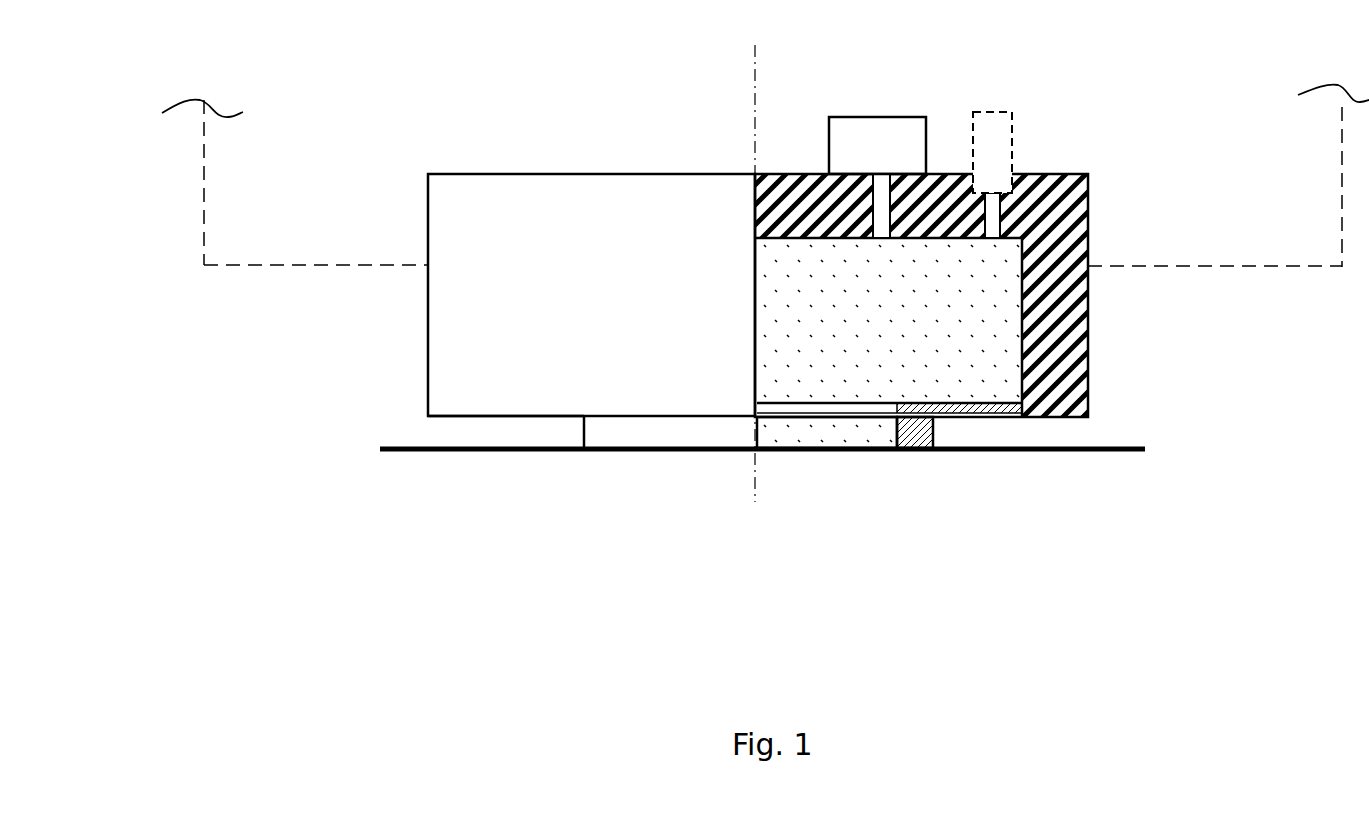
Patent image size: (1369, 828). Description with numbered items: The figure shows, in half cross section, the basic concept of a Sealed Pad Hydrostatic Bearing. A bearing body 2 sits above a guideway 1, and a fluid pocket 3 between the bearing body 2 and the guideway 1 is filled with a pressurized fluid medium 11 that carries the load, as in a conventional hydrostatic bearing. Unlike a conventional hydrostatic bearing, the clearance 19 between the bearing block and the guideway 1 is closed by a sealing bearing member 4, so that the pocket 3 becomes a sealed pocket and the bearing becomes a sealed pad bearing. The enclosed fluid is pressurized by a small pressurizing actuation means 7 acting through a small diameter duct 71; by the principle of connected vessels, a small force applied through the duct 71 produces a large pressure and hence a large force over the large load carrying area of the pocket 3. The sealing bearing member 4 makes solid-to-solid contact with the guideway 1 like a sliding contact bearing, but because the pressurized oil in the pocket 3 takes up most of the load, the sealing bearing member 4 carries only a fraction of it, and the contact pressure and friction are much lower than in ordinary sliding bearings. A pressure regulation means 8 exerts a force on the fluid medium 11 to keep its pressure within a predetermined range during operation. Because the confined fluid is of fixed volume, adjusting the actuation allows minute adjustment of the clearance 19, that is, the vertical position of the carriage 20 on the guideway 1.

The guideway 1 is at (398, 440).
The bearing body 2 is at (470, 353).
The fluid pocket 3 is at (1003, 370).
The sealing bearing member 4 is at (883, 443).
The pressurizing actuation means 7 is at (933, 128).
The pressure regulation means 8 is at (1023, 118).
The fluid medium 11 is at (867, 328).
The clearance 19 is at (503, 433).
The carriage 20 is at (198, 206).
The small diameter duct 71 is at (877, 207).